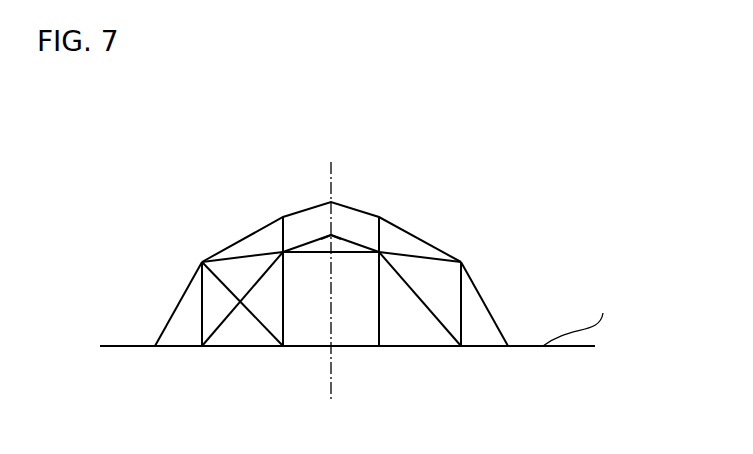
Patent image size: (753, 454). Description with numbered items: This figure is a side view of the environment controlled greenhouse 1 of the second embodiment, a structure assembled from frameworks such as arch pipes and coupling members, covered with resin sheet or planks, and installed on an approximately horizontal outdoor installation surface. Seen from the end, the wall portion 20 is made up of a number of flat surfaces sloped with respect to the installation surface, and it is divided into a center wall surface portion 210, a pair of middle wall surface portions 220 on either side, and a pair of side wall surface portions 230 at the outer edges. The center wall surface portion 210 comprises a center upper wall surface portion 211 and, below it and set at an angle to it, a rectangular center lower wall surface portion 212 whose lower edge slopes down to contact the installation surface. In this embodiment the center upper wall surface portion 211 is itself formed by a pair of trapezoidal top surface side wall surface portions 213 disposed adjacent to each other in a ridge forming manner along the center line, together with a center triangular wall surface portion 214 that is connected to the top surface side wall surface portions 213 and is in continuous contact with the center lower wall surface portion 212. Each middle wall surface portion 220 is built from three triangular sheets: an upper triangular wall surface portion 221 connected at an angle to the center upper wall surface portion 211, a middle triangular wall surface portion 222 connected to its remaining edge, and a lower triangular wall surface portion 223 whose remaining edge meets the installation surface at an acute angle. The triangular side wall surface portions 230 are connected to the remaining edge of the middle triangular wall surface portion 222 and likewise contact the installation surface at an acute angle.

The environment controlled greenhouse 1 is at (615, 54).
The wall portion 20 is at (443, 226).
The center wall surface portion 210 is at (248, 397).
The center upper wall surface portion 211 is at (517, 107).
The center lower wall surface portion 212 is at (331, 281).
The top surface side wall surface portion 213 is at (318, 232).
The center triangular wall surface portion 214 is at (342, 243).
The middle wall surface portion 220 is at (260, 120).
The upper triangular wall surface portion 221 is at (267, 242).
The middle triangular wall surface portion 222 is at (242, 270).
The lower triangular wall surface portion 223 is at (252, 337).
The side wall surface portion 230 is at (188, 322).